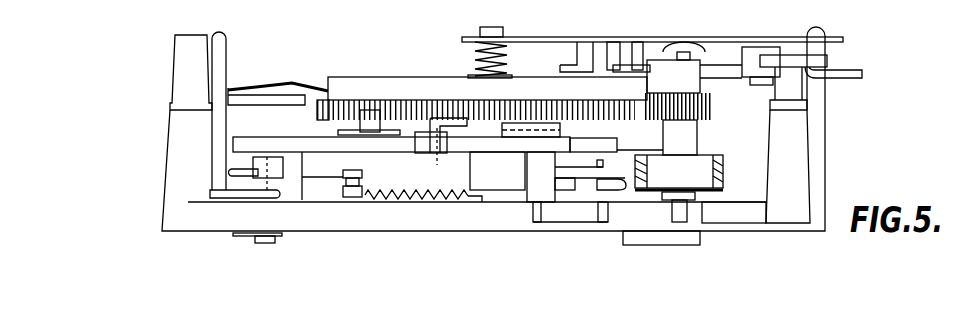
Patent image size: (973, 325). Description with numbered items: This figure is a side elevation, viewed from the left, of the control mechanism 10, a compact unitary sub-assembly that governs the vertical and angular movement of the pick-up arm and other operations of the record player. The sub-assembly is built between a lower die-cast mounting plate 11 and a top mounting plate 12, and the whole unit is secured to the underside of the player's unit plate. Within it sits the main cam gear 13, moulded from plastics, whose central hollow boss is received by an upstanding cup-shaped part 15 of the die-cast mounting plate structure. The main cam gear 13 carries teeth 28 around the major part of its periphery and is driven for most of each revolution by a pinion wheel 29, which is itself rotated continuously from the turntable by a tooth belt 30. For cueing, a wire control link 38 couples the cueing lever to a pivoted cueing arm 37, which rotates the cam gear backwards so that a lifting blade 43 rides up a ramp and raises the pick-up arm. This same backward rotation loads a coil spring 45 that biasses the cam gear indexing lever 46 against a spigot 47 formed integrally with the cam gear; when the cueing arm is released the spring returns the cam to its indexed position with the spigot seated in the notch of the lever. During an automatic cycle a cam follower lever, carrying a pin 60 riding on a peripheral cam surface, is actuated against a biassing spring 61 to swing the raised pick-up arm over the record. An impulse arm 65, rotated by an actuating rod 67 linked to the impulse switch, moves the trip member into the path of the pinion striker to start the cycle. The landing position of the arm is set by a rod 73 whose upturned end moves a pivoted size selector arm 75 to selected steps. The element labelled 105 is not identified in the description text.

The control mechanism 10 is at (362, 75).
The lower die-cast mounting plate 11 is at (430, 213).
The top mounting plate 12 is at (540, 37).
The main cam gear 13 is at (558, 103).
The cup-shaped part 15 is at (482, 197).
The teeth 28 is at (322, 100).
The pinion wheel 29 is at (695, 105).
The tooth belt 30 is at (723, 172).
The cueing arm 37 is at (307, 160).
The wire control link 38 is at (441, 112).
The lifting blade 43 is at (279, 87).
The coil spring 45 is at (365, 199).
The cam gear indexing lever 46 is at (513, 138).
The spigot 47 is at (582, 140).
The pin 60 is at (537, 180).
The biassing spring 61 is at (407, 192).
The impulse arm 65 is at (728, 62).
The actuating rod 67 is at (850, 70).
The rod 73 is at (620, 190).
The size selector arm 75 is at (580, 168).
The lever 105 is at (253, 163).